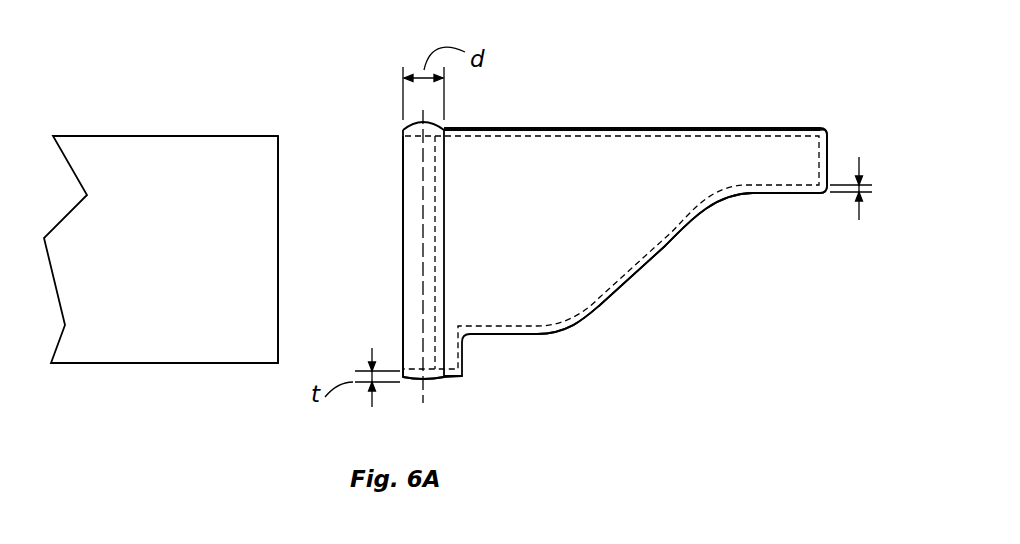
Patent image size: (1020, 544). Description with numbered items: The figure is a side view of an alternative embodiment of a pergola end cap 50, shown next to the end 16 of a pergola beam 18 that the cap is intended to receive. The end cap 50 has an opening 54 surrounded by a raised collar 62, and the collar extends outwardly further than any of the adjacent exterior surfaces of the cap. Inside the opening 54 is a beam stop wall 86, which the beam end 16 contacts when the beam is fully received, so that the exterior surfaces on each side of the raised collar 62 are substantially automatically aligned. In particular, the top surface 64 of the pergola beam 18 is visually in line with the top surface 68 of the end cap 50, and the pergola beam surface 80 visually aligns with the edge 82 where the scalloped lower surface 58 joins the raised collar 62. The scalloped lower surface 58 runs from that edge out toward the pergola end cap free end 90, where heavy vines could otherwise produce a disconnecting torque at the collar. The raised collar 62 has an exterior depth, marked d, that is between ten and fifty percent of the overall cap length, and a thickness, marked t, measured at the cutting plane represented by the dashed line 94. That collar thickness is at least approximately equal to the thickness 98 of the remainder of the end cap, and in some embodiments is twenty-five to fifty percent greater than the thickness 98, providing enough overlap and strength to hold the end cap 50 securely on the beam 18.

The end of pergola beam 16 is at (296, 190).
The pergola beam 18 is at (175, 271).
The pergola end cap 50 is at (643, 204).
The opening 54 is at (392, 193).
The scalloped lower surface 58 is at (645, 272).
The raised collar 62 is at (410, 295).
The top surface of pergola beam 64 is at (192, 136).
The top surface of pergola end cap 68 is at (508, 127).
The pergola beam surface 80 is at (177, 363).
The edge 82 is at (440, 377).
The beam stop wall 86 is at (437, 258).
The pergola end cap free end 90 is at (834, 147).
The dashed line 94 is at (422, 239).
The thickness of remainder of pergola end cap 98 is at (872, 191).